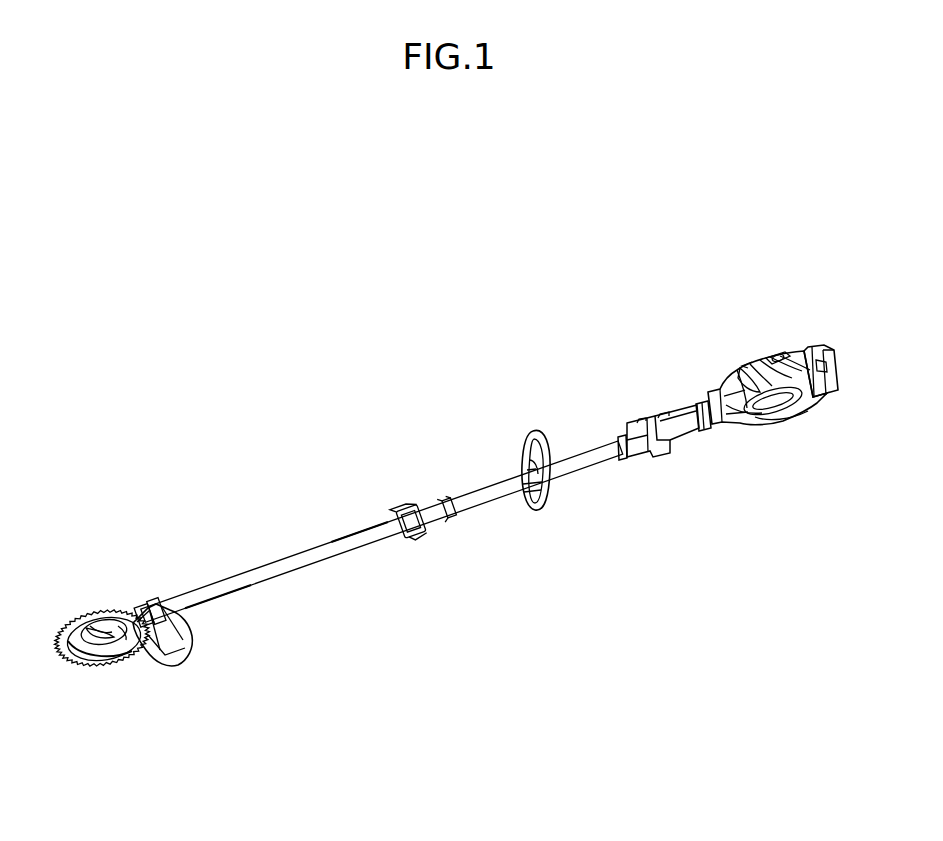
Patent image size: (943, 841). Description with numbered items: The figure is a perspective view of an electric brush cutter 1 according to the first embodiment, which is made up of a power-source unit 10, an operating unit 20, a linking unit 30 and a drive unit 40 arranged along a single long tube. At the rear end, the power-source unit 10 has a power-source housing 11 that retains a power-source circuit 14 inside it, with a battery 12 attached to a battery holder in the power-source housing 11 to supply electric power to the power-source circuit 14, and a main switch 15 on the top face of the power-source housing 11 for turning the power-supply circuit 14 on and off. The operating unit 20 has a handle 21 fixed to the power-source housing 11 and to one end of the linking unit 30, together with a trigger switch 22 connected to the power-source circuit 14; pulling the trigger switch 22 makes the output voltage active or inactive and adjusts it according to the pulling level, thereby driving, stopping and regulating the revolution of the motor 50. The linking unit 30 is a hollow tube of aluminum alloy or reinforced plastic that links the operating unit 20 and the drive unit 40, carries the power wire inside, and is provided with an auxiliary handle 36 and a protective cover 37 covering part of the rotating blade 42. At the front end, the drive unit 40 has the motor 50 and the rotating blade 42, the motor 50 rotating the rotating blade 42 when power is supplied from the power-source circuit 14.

The electric brush cutter 1 is at (77, 237).
The power-source unit 10 is at (781, 248).
The power-source housing 11 is at (747, 427).
The battery 12 is at (830, 418).
The power-source circuit 14 is at (737, 377).
The main switch 15 is at (775, 353).
The operating unit 20 is at (664, 288).
The handle 21 is at (690, 432).
The trigger switch 22 is at (657, 455).
The linking unit 30 is at (563, 322).
The auxiliary handle 36 is at (541, 508).
The protective cover 37 is at (182, 654).
The drive unit 40 is at (118, 470).
The rotating blade 42 is at (80, 648).
The motor 50 is at (115, 639).